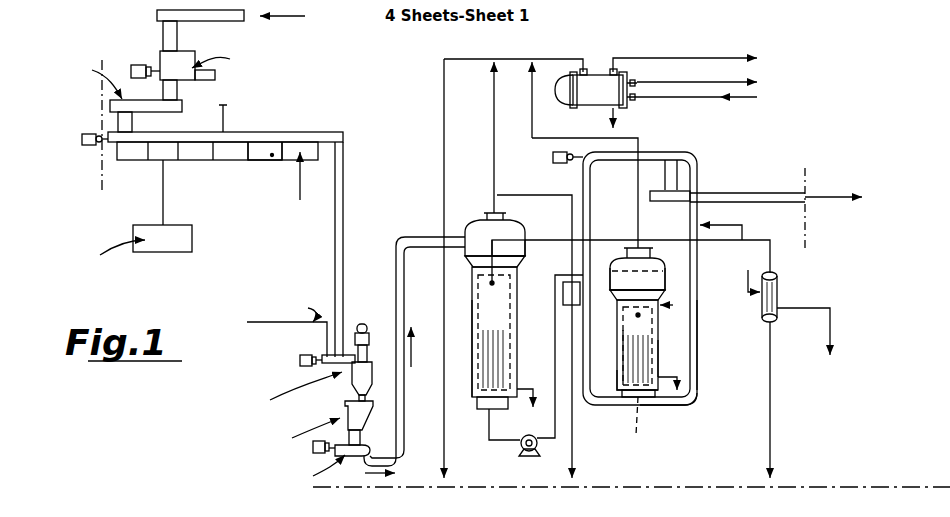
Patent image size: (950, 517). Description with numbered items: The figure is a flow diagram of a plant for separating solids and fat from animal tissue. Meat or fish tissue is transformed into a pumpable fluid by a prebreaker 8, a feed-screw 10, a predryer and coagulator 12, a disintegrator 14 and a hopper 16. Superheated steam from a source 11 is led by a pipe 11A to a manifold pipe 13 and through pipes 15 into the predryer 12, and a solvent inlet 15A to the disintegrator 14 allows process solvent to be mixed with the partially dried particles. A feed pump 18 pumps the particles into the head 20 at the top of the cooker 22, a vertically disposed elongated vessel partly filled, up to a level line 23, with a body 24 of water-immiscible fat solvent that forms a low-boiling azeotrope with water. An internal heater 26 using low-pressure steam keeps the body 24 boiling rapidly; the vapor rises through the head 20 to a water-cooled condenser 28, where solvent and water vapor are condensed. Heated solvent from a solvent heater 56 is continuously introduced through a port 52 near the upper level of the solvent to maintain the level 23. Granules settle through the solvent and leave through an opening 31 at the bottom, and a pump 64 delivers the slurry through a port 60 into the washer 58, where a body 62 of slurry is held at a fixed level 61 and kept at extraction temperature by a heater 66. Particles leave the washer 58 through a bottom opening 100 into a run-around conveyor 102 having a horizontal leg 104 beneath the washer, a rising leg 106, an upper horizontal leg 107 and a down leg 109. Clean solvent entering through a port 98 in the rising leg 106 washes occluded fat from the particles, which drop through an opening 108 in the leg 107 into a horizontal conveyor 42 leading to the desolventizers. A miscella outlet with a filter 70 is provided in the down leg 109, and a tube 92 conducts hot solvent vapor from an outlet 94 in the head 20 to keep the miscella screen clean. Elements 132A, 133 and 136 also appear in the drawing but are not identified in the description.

The prebreaker 8 is at (182, 57).
The feed-screw 10 is at (133, 104).
The source 11 is at (192, 238).
The pipe 11A is at (163, 183).
The predryer and coagulator 12 is at (293, 130).
The manifold pipe 13 is at (272, 155).
The disintegrator 14 is at (360, 382).
The pipes 15 is at (245, 150).
The solvent inlet 15A is at (327, 336).
The hopper 16 is at (345, 405).
The feed pump 18 is at (338, 450).
The head 20 is at (478, 233).
The cooker 22 is at (515, 363).
The level line 23 is at (528, 262).
The body of solvent 24 is at (510, 377).
The internal heater 26 is at (478, 353).
The condenser 28 is at (595, 82).
The opening 31 is at (489, 410).
The horizontal conveyor 42 is at (790, 192).
The port 52 is at (492, 290).
The solvent heater 56 is at (778, 290).
The washer 58 is at (614, 380).
The port 60 is at (638, 316).
The level 61 is at (663, 272).
The body of slurry 62 is at (632, 352).
The pump 64 is at (520, 445).
The heater 66 is at (658, 360).
The filter 70 is at (563, 295).
The tube 92 is at (572, 225).
The outlet 94 is at (494, 205).
The port 98 is at (715, 218).
The opening 100 is at (643, 428).
The run-around conveyor 102 is at (706, 160).
The horizontal leg 104 is at (672, 406).
The rising leg 106 is at (697, 362).
The upper horizontal leg 107 is at (652, 148).
The opening 108 is at (668, 160).
The down leg 109 is at (583, 182).
The fitting 132A is at (88, 146).
The conduit 133 is at (343, 157).
The pin 136 is at (225, 110).